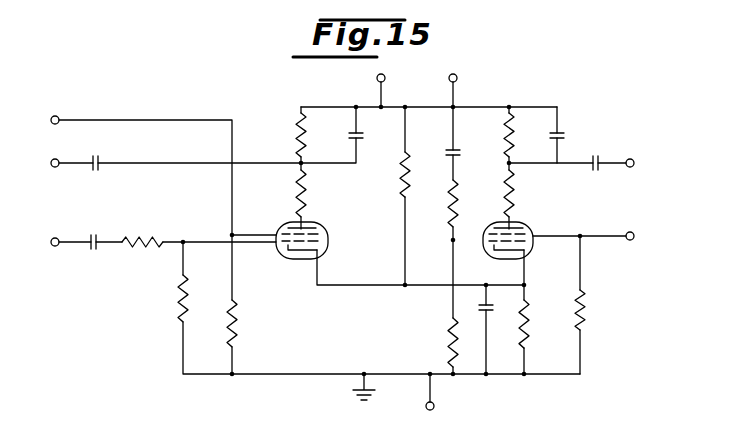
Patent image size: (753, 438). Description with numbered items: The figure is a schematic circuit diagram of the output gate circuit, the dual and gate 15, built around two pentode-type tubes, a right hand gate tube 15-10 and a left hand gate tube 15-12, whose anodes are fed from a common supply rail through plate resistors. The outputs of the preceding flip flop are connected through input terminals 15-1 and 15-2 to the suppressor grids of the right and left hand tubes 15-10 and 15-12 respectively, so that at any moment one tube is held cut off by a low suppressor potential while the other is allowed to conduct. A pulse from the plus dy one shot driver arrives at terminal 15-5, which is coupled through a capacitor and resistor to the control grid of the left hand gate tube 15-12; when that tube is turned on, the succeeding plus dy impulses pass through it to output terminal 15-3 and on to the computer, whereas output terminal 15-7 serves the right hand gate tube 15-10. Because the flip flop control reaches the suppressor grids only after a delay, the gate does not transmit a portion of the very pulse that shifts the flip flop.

The dual and gate 15 is at (510, 94).
The input terminal 15-1 is at (630, 231).
The input terminal 15-2 is at (55, 116).
The output terminal 15-3 is at (51, 163).
The terminal 15-5 is at (51, 241).
The output terminal 15-7 is at (630, 158).
The right hand gate tube 15-10 is at (522, 222).
The left hand gate tube 15-12 is at (322, 222).